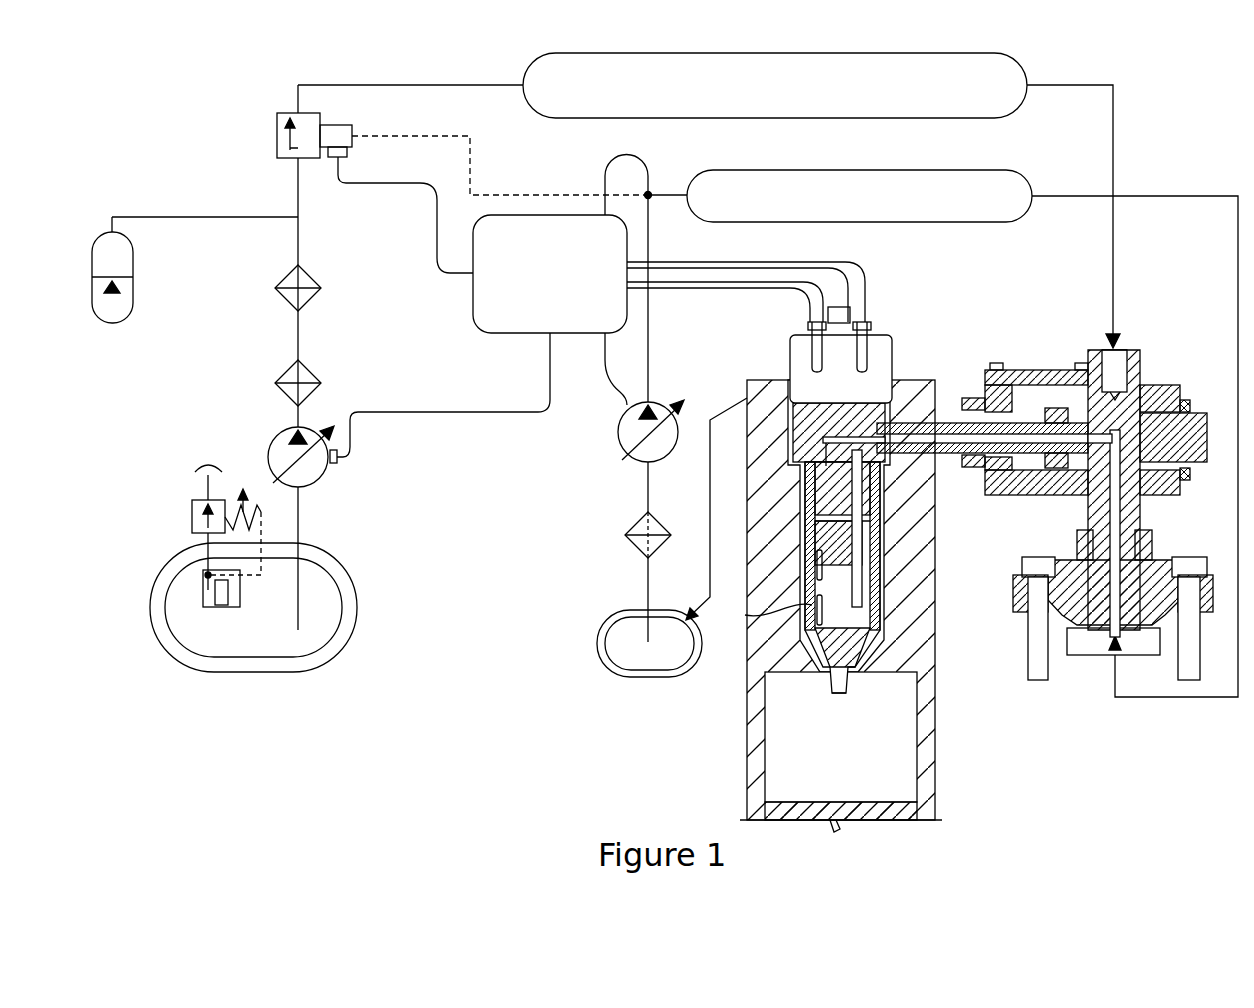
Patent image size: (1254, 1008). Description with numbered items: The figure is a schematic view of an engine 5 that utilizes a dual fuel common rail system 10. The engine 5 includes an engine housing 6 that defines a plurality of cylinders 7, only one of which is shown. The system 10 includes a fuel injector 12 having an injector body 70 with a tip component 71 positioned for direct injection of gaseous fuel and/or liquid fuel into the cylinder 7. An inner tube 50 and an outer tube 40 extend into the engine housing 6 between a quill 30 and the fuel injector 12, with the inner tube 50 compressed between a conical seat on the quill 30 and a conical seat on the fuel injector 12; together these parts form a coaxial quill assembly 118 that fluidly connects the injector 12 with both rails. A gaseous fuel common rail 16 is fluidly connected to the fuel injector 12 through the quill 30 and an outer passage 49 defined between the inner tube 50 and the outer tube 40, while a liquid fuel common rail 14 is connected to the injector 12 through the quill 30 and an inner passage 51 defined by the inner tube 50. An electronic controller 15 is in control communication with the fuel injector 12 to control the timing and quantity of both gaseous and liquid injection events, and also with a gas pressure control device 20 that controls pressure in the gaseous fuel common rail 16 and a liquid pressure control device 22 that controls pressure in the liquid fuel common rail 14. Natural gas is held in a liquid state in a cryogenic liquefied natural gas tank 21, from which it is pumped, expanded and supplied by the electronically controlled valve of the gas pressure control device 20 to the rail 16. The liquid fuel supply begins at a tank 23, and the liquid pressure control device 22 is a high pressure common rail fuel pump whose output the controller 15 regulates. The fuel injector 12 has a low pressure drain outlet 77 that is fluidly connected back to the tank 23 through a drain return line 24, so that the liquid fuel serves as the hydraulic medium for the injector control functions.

The dual fuel common rail system 10 is at (1165, 88).
The gas pressure control device 20 is at (248, 170).
The cryogenic liquefied natural gas tank 21 is at (150, 600).
The liquid pressure control device 22 is at (590, 459).
The tank 23 is at (597, 642).
The drain return line 24 is at (710, 486).
The electronic controller 15 is at (497, 333).
The gaseous fuel common rail 16 is at (1000, 118).
The liquid fuel common rail 14 is at (1000, 222).
The fuel injector 12 is at (891, 316).
The drain outlet 77 is at (790, 385).
The injector body 70 is at (763, 614).
The tip component 71 is at (850, 680).
The engine housing 6 is at (935, 552).
The cylinder 7 is at (917, 710).
The engine 5 is at (934, 340).
The outer passage 49 is at (968, 397).
The inner tube 50 is at (940, 422).
The outer tube 40 is at (948, 460).
The inner passage 51 is at (1032, 470).
The quill 30 is at (1140, 352).
The coaxial quill assembly 118 is at (1145, 338).